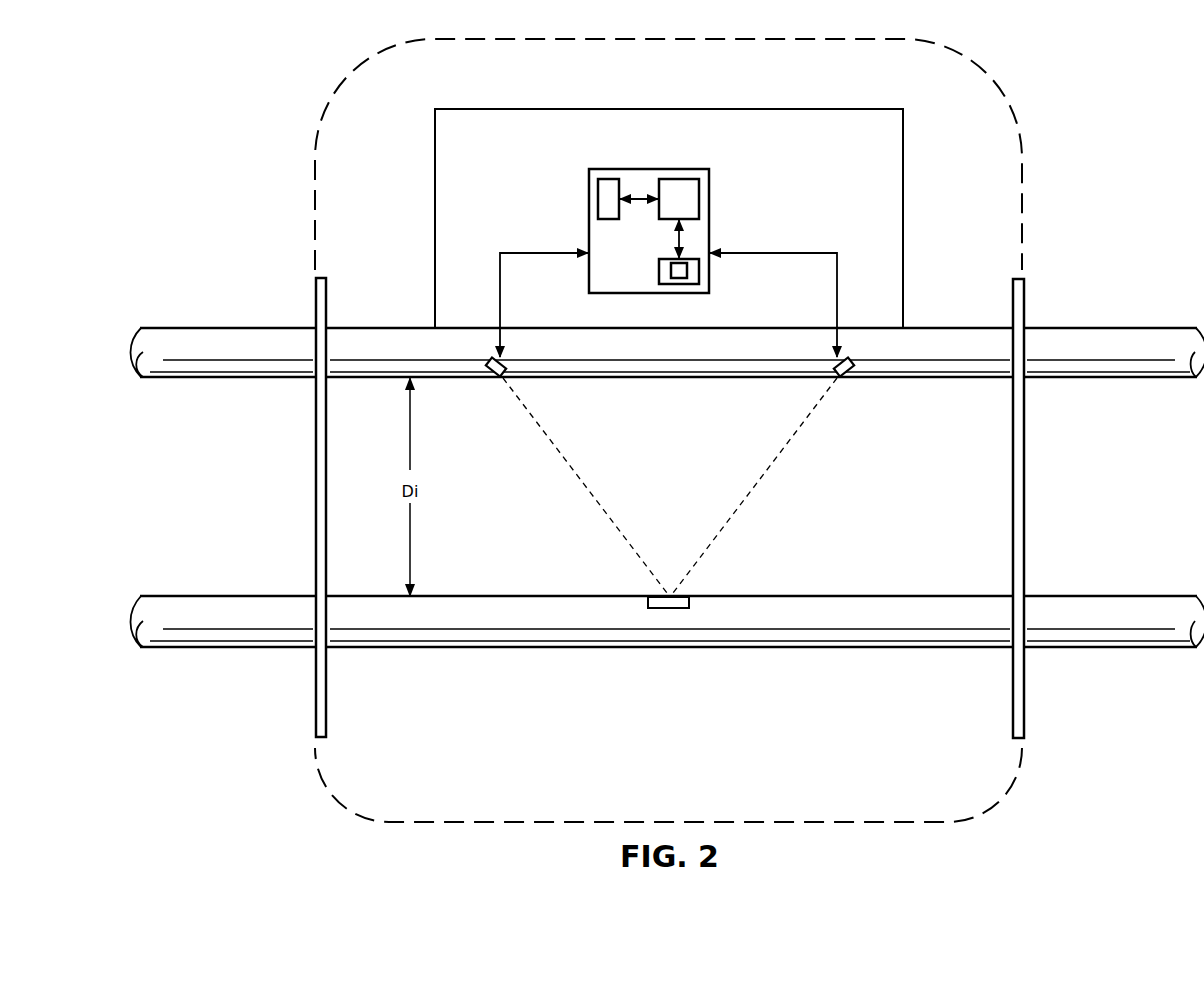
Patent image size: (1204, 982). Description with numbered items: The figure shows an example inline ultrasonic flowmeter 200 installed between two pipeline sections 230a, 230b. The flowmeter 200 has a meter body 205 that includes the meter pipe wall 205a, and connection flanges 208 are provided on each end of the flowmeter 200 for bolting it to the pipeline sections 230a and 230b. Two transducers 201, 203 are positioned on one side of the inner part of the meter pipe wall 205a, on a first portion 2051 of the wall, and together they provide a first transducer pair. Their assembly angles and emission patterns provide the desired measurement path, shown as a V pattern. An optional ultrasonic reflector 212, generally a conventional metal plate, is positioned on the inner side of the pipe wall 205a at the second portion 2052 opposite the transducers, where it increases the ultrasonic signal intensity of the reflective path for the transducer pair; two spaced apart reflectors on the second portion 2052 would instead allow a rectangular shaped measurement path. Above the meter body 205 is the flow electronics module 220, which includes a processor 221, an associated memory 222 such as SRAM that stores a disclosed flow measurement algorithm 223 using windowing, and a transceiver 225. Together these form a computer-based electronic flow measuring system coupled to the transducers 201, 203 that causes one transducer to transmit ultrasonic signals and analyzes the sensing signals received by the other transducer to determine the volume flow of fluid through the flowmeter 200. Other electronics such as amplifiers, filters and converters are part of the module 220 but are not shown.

The inline ultrasonic flowmeter 200 is at (984, 106).
The meter body 205 is at (668, 97).
The meter pipe wall 205a is at (390, 327).
The first portion of the meter pipe wall 2051 is at (945, 327).
The second portion of the meter pipe wall 2052 is at (863, 649).
The connection flange 208 is at (316, 493).
The transducer 201 is at (493, 379).
The transducer 203 is at (845, 379).
The ultrasonic reflector 212 is at (680, 610).
The flow electronics module 220 is at (720, 206).
The processor 221 is at (689, 178).
The memory 222 is at (700, 277).
The flow measurement algorithm 223 is at (670, 270).
The transceiver 225 is at (608, 178).
The pipeline section 230a is at (232, 649).
The pipeline section 230b is at (1104, 649).